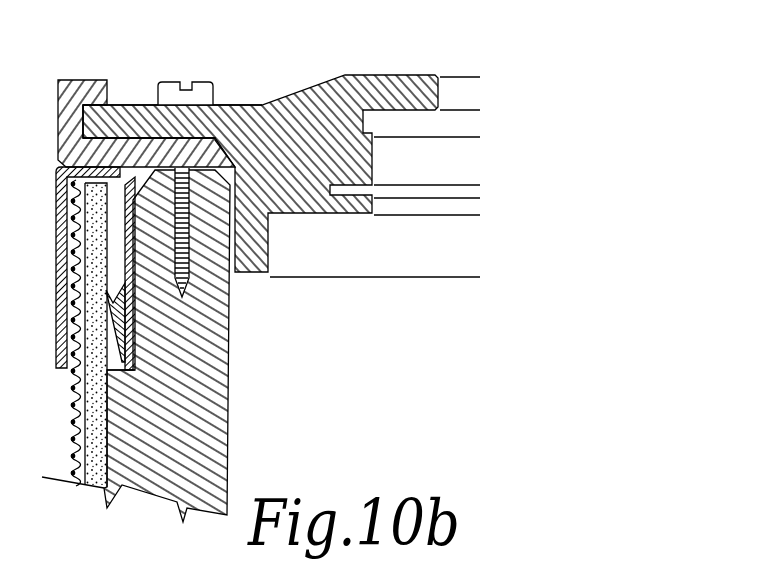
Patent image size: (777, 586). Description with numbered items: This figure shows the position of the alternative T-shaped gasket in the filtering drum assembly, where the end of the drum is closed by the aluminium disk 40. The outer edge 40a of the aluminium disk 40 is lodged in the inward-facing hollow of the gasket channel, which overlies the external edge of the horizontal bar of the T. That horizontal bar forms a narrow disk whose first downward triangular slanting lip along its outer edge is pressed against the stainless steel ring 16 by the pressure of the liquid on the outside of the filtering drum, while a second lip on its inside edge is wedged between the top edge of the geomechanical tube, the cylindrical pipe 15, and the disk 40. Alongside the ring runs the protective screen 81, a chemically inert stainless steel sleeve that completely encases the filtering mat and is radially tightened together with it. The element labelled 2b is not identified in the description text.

The aluminium disk 40 is at (307, 112).
The outer edge of the aluminium disk 40a is at (125, 112).
The cover body 2b is at (117, 138).
The stainless steel ring 16 is at (58, 242).
The protective screen 81 is at (67, 412).
The cylindrical pipe 15 is at (212, 403).